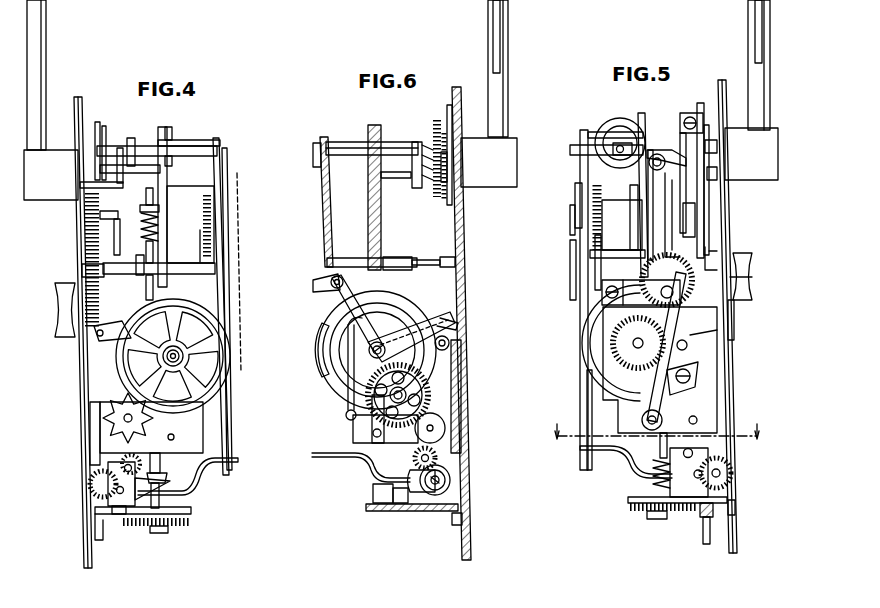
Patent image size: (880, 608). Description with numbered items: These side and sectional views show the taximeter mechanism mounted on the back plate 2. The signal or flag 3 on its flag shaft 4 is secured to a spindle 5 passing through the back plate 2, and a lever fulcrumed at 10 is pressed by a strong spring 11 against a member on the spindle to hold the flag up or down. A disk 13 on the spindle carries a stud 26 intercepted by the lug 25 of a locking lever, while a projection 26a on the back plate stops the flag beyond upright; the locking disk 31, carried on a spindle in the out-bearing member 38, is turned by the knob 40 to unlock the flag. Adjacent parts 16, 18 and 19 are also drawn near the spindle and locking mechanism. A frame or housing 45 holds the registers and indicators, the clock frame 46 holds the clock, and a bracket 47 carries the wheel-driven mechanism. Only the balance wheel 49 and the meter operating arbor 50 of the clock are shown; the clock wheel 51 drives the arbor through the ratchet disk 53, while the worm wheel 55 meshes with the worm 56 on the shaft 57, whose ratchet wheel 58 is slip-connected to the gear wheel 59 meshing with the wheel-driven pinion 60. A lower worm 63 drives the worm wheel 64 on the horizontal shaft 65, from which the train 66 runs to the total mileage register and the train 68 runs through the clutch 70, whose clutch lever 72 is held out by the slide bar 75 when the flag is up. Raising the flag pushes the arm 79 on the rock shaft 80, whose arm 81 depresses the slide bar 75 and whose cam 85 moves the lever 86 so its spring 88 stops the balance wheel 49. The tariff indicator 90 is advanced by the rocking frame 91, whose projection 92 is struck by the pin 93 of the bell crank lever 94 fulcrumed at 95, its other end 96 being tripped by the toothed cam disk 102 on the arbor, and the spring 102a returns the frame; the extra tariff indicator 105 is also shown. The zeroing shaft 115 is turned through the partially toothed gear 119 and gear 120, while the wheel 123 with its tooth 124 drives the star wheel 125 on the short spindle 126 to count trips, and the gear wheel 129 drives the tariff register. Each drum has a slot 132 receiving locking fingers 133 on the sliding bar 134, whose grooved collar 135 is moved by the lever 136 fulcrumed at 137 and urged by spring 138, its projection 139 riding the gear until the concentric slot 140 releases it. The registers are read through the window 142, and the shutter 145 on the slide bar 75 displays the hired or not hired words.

In FIG. 4, the back plate 2 is at (82, 382).
In FIG. 6, the back plate 2 is at (467, 282).
In FIG. 5, the back plate 2 is at (736, 231).
In FIG. 6, the signal or flag 3 is at (500, 28).
In FIG. 5, the signal or flag 3 is at (755, 17).
In FIG. 4, the flag shaft 4 is at (36, 75).
In FIG. 6, the flag shaft 4 is at (505, 80).
In FIG. 5, the flag shaft 4 is at (750, 60).
In FIG. 4, the spindle 5 is at (51, 175).
In FIG. 6, the spindle 5 is at (489, 162).
In FIG. 5, the spindle 5 is at (751, 154).
In FIG. 5, the fulcrum 10 is at (662, 448).
In FIG. 4, the spring 11 is at (82, 270).
In FIG. 4, the disk 13 is at (97, 122).
In FIG. 6, the disk 13 is at (435, 120).
In FIG. 5, the disk 13 is at (706, 125).
In FIG. 4, the threaded rod 16 is at (86, 251).
In FIG. 4, the arm 18 is at (100, 215).
In FIG. 5, the stop 19 is at (695, 213).
In FIG. 5, the projection or lug 25 is at (717, 183).
In FIG. 6, the projection or stud 26 is at (462, 196).
In FIG. 5, the projection or stud 26 is at (717, 165).
In FIG. 6, the projection 26a is at (446, 150).
In FIG. 5, the projection 26a is at (690, 113).
In FIG. 5, the locking disk 31 is at (735, 316).
In FIG. 5, the out-bearing member 38 is at (740, 251).
In FIG. 4, the knob 40 is at (55, 310).
In FIG. 5, the knob 40 is at (752, 291).
In FIG. 4, the frame or housing 45 is at (146, 433).
In FIG. 6, the frame or housing 45 is at (353, 429).
In FIG. 5, the frame or housing 45 is at (603, 378).
In FIG. 4, the clock frame or housing 46 is at (219, 143).
In FIG. 5, the clock frame or housing 46 is at (647, 120).
In FIG. 4, the bracket or frame 47 is at (191, 511).
In FIG. 6, the bracket or frame 47 is at (404, 512).
In FIG. 5, the bracket or frame 47 is at (628, 500).
In FIG. 5, the balance wheel 49 is at (572, 151).
In FIG. 4, the meter operating arbor 50 is at (181, 228).
In FIG. 5, the meter operating arbor 50 is at (623, 225).
In FIG. 4, the wheel 51 is at (204, 253).
In FIG. 5, the wheel 51 is at (613, 210).
In FIG. 4, the ratchet disk 53 is at (205, 210).
In FIG. 5, the ratchet disk 53 is at (625, 217).
In FIG. 4, the worm wheel 55 is at (133, 145).
In FIG. 4, the worm 56 is at (146, 247).
In FIG. 4, the shaft 57 is at (156, 290).
In FIG. 5, the shaft 57 is at (660, 453).
In FIG. 4, the ratchet wheel 58 is at (166, 531).
In FIG. 5, the ratchet wheel 58 is at (657, 520).
In FIG. 4, the gear wheel 59 is at (190, 523).
In FIG. 5, the gear wheel 59 is at (632, 512).
In FIG. 5, the pinion 60 is at (700, 530).
In FIG. 4, the worm 63 is at (168, 482).
In FIG. 5, the worm 63 is at (640, 479).
In FIG. 4, the worm wheel 64 is at (92, 487).
In FIG. 5, the worm wheel 64 is at (730, 476).
In FIG. 4, the horizontal shaft 65 is at (121, 520).
In FIG. 6, the horizontal shaft 65 is at (450, 479).
In FIG. 5, the horizontal shaft 65 is at (712, 484).
In FIG. 5, the train of gearing 66 is at (690, 436).
In FIG. 4, the train of gearing 68 is at (122, 463).
In FIG. 6, the train of gearing 68 is at (436, 458).
In FIG. 6, the clutch 70 is at (447, 487).
In FIG. 4, the clutch lever 72 is at (237, 460).
In FIG. 6, the clutch lever 72 is at (318, 460).
In FIG. 5, the clutch lever 72 is at (600, 447).
In FIG. 4, the vertical slide bar 75 is at (229, 430).
In FIG. 5, the vertical slide bar 75 is at (587, 401).
In FIG. 4, the arm 79 is at (120, 148).
In FIG. 4, the rock shaft 80 is at (165, 146).
In FIG. 6, the rock shaft 80 is at (350, 157).
In FIG. 6, the arm 81 is at (313, 160).
In FIG. 4, the cam 85 is at (170, 137).
In FIG. 6, the cam 85 is at (369, 135).
In FIG. 4, the lever 86 is at (171, 130).
In FIG. 5, the spring 88 is at (608, 124).
In FIG. 4, the indicator 90 is at (212, 306).
In FIG. 6, the indicator 90 is at (393, 314).
In FIG. 6, the rocking frame 91 is at (395, 334).
In FIG. 6, the projection 92 is at (367, 345).
In FIG. 6, the pin 93 is at (395, 322).
In FIG. 6, the bell crank lever 94 is at (330, 290).
In FIG. 6, the fulcrum 95 is at (346, 258).
In FIG. 6, the lever end 96 is at (318, 280).
In FIG. 5, the toothed cam disk 102 is at (575, 193).
In FIG. 6, the spring 102a is at (459, 326).
In FIG. 5, the indicator 105 is at (595, 290).
In FIG. 4, the shaft 115 is at (180, 360).
In FIG. 6, the shaft 115 is at (390, 362).
In FIG. 5, the shaft 115 is at (630, 343).
In FIG. 5, the gear 119 is at (640, 273).
In FIG. 5, the gear 120 is at (588, 326).
In FIG. 4, the wheel 123 is at (130, 378).
In FIG. 4, the tooth 124 is at (118, 343).
In FIG. 4, the star wheel 125 is at (104, 418).
In FIG. 4, the short spindle 126 is at (124, 422).
In FIG. 6, the gear wheel 129 is at (368, 396).
In FIG. 6, the slot 132 is at (322, 348).
In FIG. 6, the locking fingers 133 is at (372, 433).
In FIG. 4, the horizontal sliding bar 134 is at (176, 438).
In FIG. 6, the horizontal sliding bar 134 is at (366, 468).
In FIG. 5, the horizontal sliding bar 134 is at (696, 407).
In FIG. 5, the grooved collar 135 is at (648, 412).
In FIG. 5, the lever 136 is at (718, 333).
In FIG. 5, the fulcrum 137 is at (698, 373).
In FIG. 5, the spring 138 is at (687, 348).
In FIG. 5, the projection 139 is at (641, 291).
In FIG. 5, the concentric slot 140 is at (752, 262).
In FIG. 6, the window 142 is at (461, 420).
In FIG. 4, the plate or shutter 145 is at (240, 207).